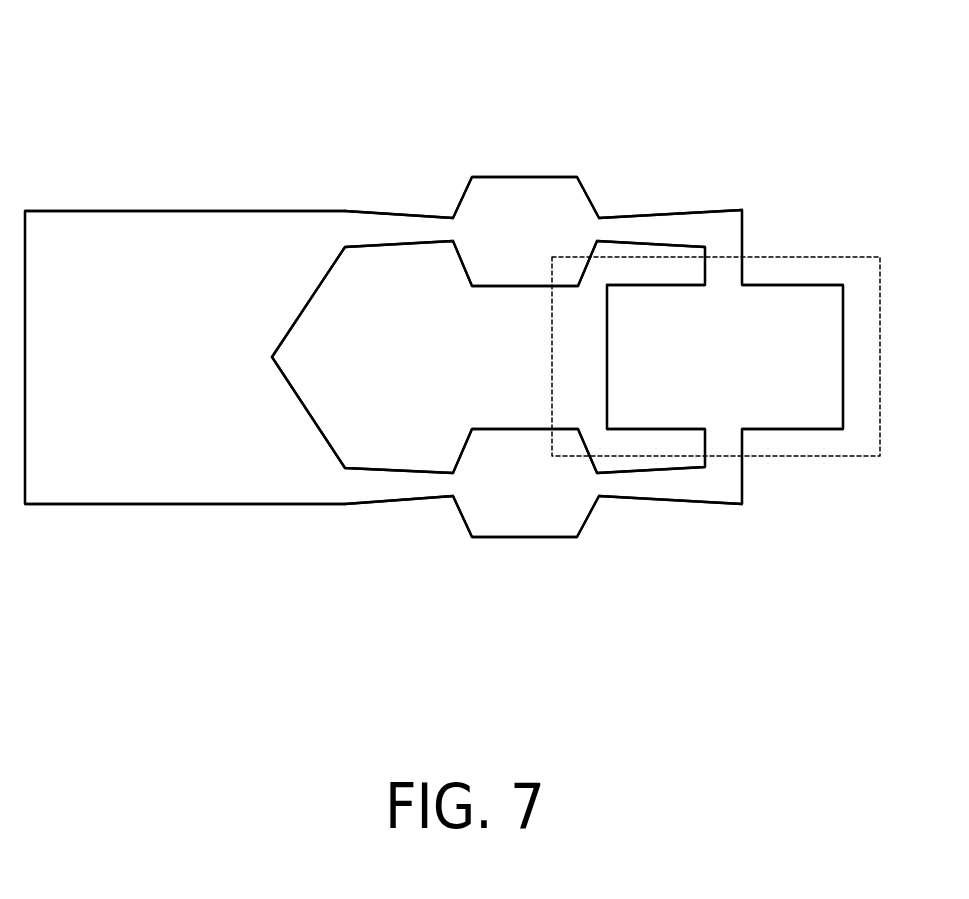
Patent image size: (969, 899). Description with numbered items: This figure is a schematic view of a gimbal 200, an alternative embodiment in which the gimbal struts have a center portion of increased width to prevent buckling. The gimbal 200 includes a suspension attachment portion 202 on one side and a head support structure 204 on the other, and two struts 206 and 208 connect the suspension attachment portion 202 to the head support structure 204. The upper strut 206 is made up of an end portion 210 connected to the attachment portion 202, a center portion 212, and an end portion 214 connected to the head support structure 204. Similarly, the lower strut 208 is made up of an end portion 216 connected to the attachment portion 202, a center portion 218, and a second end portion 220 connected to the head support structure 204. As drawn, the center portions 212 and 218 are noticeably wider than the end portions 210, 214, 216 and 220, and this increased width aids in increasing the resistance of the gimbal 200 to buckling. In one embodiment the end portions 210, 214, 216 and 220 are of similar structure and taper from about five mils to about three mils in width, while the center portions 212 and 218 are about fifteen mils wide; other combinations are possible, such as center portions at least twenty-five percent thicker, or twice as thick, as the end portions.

The gimbal 200 is at (207, 125).
The suspension attachment portion 202 is at (145, 332).
The head support structure 204 is at (717, 357).
The strut 206 is at (425, 213).
The strut 208 is at (400, 503).
The end portion 210 is at (372, 232).
The center portion 212 is at (535, 223).
The end portion 214 is at (662, 232).
The end portion 216 is at (355, 485).
The center portion 218 is at (527, 495).
The second end portion 220 is at (655, 485).